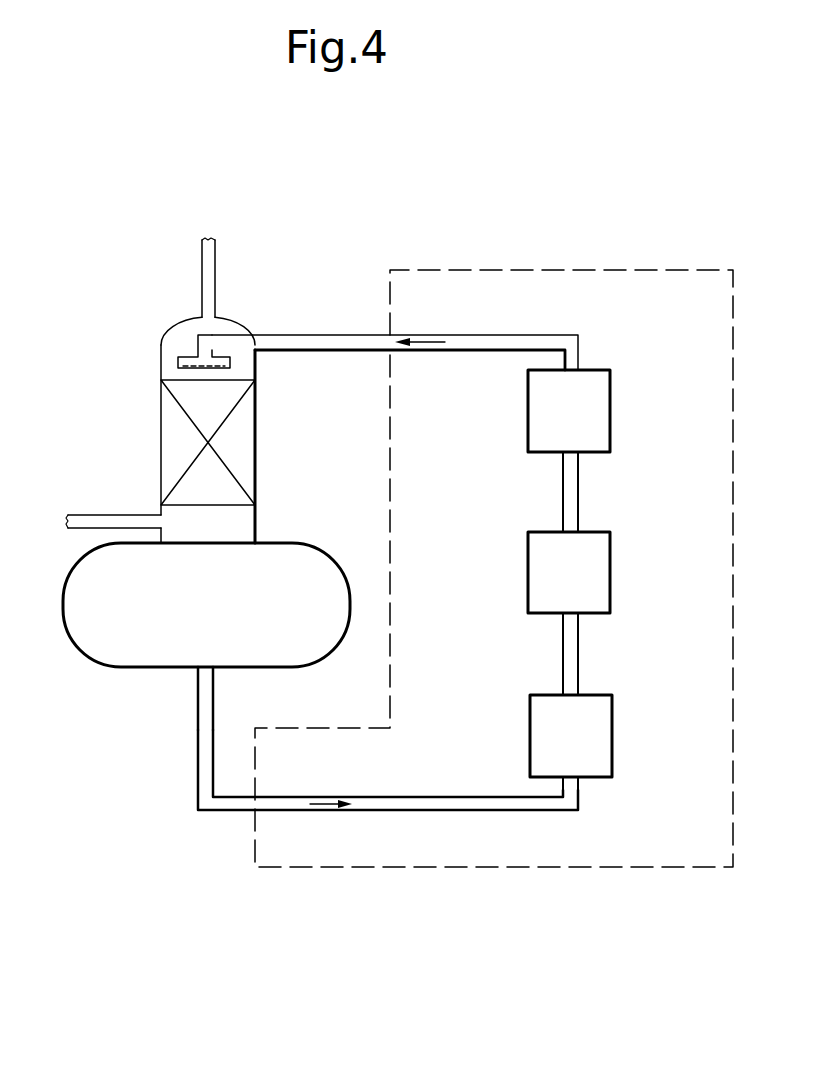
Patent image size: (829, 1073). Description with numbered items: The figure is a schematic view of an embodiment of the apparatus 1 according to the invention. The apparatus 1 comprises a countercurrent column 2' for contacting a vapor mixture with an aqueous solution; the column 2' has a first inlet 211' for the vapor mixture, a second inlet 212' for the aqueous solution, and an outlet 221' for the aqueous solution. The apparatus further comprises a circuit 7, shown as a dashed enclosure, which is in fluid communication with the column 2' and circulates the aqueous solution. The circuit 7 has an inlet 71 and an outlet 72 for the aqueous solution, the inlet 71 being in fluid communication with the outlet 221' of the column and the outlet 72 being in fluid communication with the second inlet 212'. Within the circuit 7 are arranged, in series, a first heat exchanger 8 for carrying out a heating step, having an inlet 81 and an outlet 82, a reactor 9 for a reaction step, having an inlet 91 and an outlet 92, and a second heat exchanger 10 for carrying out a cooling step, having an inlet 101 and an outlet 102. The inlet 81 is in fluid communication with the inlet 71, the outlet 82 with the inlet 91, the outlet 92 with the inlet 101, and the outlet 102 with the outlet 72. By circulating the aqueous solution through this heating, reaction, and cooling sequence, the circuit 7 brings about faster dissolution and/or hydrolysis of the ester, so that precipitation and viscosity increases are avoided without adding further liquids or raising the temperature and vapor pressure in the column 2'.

The apparatus 1 is at (196, 195).
The countercurrent column 2' is at (232, 390).
The second inlet 212' is at (258, 323).
The first inlet 211' is at (113, 490).
The outlet 221' is at (174, 698).
The inlet 71 is at (203, 767).
The outlet 72 is at (360, 352).
The circuit 7 is at (373, 868).
The first heat exchanger 8 is at (580, 758).
The inlet 81 is at (568, 778).
The outlet 82 is at (568, 695).
The reactor 9 is at (580, 590).
The inlet 91 is at (568, 613).
The outlet 92 is at (568, 532).
The second heat exchanger 10 is at (582, 423).
The inlet 101 is at (572, 452).
The outlet 102 is at (572, 370).